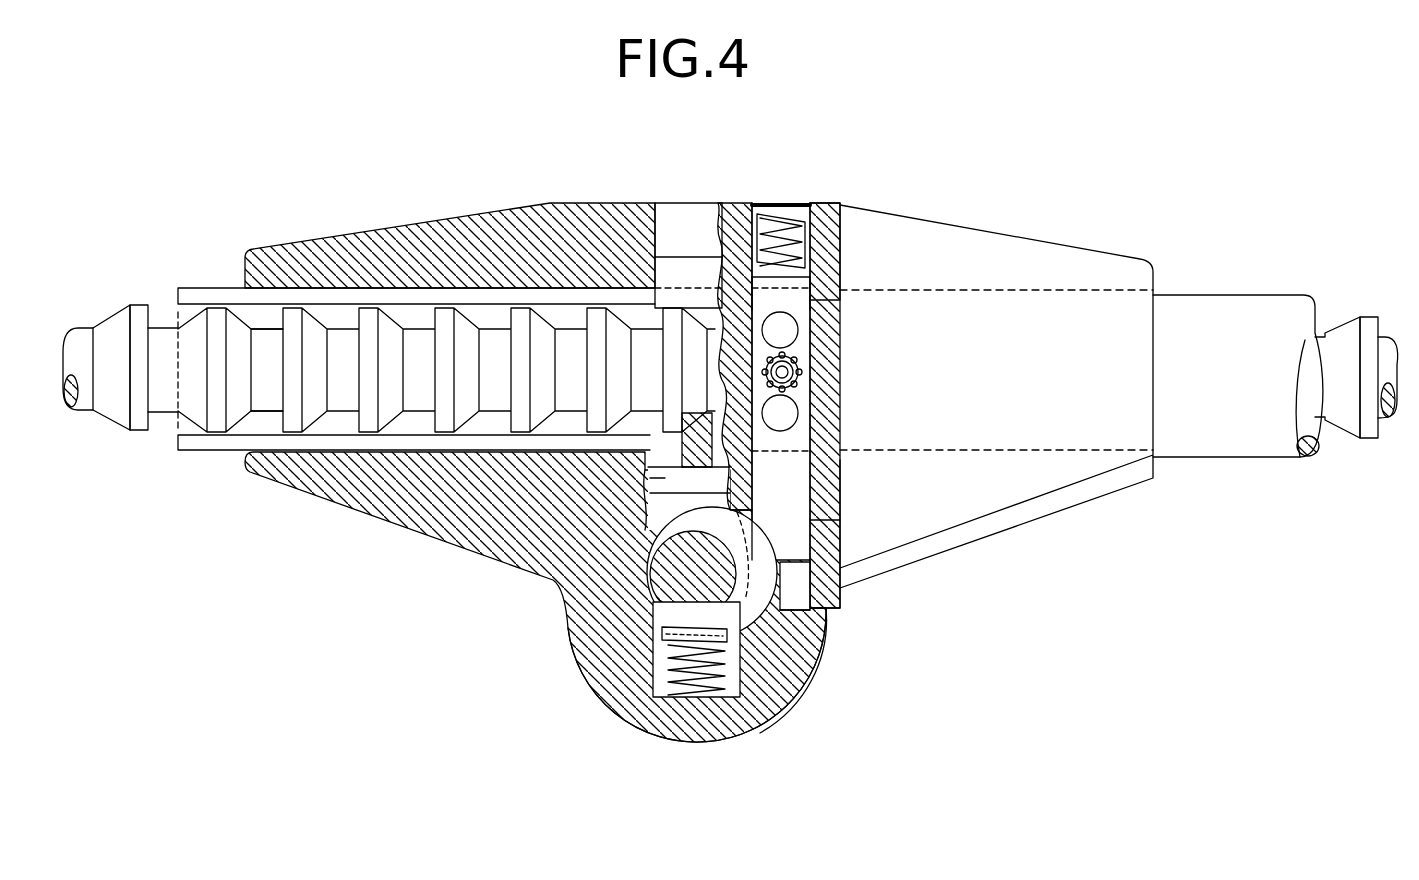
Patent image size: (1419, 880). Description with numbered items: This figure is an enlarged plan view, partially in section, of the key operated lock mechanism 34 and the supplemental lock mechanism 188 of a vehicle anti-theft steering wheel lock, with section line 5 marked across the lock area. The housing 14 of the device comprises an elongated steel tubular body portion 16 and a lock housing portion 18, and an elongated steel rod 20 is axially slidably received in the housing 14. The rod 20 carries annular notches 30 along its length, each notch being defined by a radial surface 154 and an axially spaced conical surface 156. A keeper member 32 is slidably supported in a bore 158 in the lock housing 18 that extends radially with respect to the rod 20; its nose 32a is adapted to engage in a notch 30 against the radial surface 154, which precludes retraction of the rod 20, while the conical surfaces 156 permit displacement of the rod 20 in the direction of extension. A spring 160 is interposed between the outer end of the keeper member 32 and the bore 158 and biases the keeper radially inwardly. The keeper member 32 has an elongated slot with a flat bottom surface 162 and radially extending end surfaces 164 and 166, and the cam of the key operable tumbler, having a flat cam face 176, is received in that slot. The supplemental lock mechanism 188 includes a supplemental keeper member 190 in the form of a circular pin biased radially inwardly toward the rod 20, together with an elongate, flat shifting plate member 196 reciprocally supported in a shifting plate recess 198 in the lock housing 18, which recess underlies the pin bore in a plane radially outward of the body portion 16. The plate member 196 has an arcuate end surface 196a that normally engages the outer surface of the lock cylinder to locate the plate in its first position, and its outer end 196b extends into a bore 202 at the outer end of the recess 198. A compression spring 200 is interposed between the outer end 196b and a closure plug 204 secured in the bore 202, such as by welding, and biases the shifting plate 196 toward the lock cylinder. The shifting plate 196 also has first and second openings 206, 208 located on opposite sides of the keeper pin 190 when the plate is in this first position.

The section line 5- 5 is at (822, 158).
The housing 14 is at (1040, 181).
The tubular body portion 16 is at (1283, 290).
The lock housing portion 18 is at (385, 228).
The rod 20 is at (105, 283).
The notches 30 is at (240, 318).
The keeper member 32 is at (645, 502).
The nose 32a is at (650, 466).
The key operated lock mechanism 34 is at (637, 735).
The radial surface 154 is at (215, 442).
The conical surface 156 is at (270, 405).
The bore 158 is at (768, 683).
The spring 160 is at (788, 706).
The flat bottom surface 162 is at (660, 576).
The end surface 164 is at (655, 535).
The end surface 166 is at (660, 640).
The flat cam face 176 is at (655, 632).
The supplemental lock mechanism 188 is at (913, 363).
The supplemental keeper member 190 is at (842, 358).
The shifting plate member 196 is at (842, 460).
The arcuate end surface 196a is at (842, 536).
The outer end 196b is at (845, 268).
The shifting plate recess 198 is at (842, 502).
The compression spring 200 is at (815, 206).
The bore 202 is at (843, 250).
The closure plug 204 is at (770, 203).
The first opening 206 is at (842, 333).
The second opening 208 is at (842, 420).